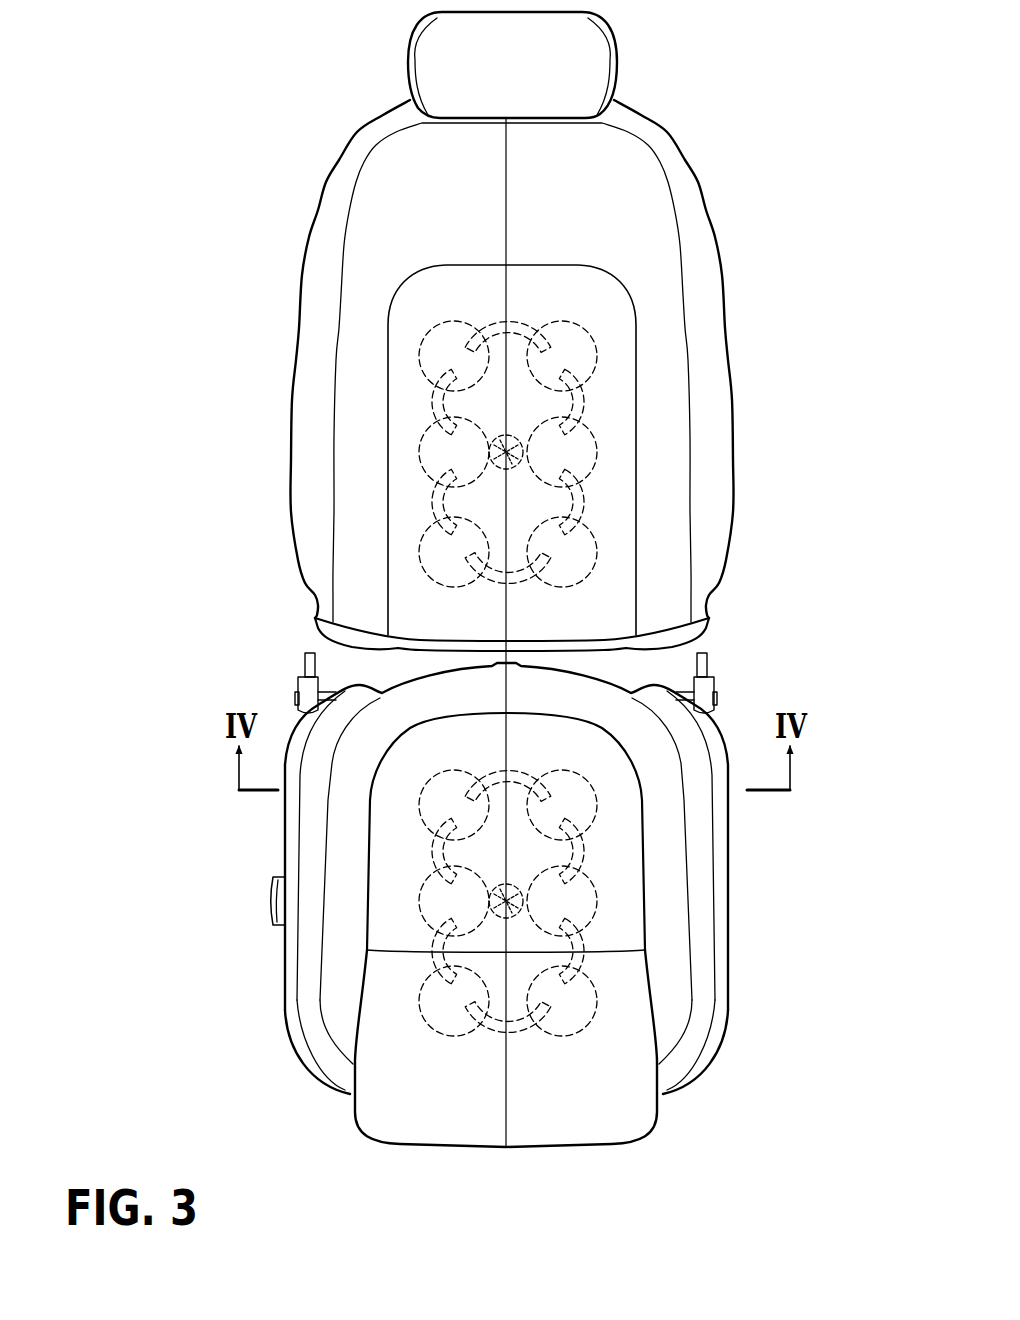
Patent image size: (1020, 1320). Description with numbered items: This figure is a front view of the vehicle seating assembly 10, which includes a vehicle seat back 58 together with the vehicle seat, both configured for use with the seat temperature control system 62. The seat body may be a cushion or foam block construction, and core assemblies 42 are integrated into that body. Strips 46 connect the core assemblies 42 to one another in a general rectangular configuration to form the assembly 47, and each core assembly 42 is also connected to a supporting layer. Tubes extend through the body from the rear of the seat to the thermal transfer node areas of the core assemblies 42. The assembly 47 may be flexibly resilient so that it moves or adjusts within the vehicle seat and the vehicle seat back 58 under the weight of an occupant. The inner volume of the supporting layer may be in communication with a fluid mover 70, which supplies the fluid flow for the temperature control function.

The vehicle seating assembly 10 is at (118, 275).
The vehicle seat back 58 is at (326, 178).
The assembly 47 is at (490, 325).
The fluid mover 70 is at (490, 448).
The core assemblies 42 is at (443, 1040).
The strips 46 is at (440, 962).
The seat temperature control system 62 is at (282, 880).